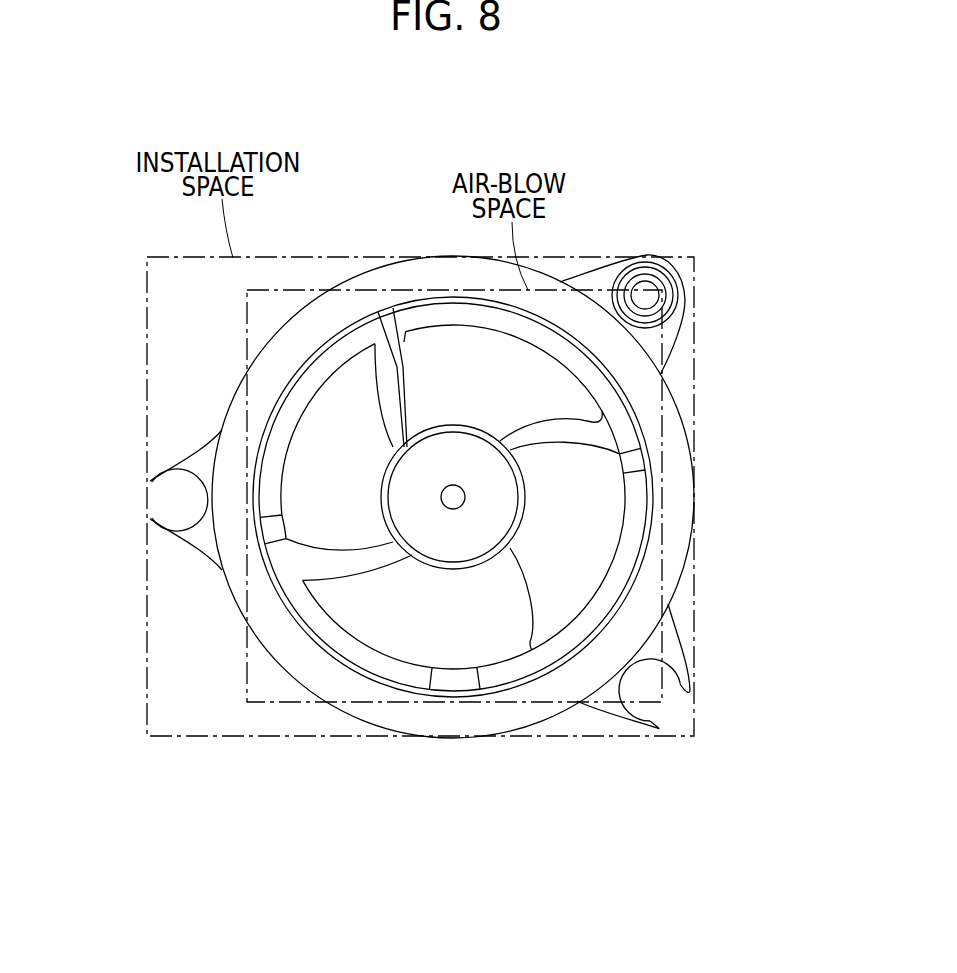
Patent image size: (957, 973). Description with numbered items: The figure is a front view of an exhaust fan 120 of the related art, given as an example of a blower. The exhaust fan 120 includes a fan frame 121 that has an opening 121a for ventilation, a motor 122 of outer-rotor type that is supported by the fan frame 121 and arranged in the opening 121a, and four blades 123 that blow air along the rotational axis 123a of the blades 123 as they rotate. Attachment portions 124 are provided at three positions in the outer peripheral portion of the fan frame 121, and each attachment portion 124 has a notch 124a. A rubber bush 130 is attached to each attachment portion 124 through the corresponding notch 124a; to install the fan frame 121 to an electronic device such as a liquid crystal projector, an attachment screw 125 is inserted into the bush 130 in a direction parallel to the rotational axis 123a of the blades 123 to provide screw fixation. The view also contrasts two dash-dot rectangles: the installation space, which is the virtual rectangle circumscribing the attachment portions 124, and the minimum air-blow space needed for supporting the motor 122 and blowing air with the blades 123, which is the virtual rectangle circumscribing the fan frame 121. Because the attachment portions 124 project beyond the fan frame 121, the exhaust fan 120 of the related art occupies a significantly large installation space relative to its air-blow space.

The exhaust fan 120 is at (388, 185).
The fan frame 121 is at (656, 484).
The opening 121a is at (638, 525).
The motor 122 is at (420, 537).
The blades 123 is at (490, 632).
The rotational axis 123a is at (454, 499).
The attachment portions 124 is at (670, 653).
The notch 124a is at (667, 708).
The attachment screw 125 is at (648, 290).
The rubber bush 130 is at (676, 290).